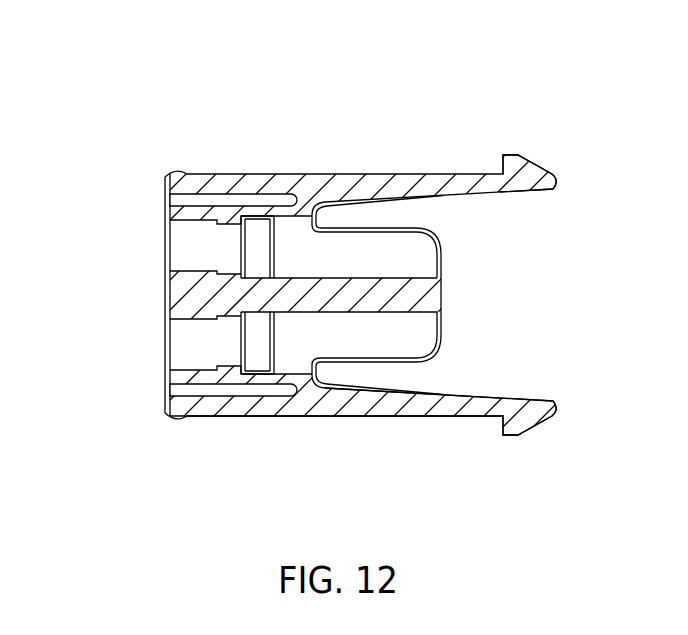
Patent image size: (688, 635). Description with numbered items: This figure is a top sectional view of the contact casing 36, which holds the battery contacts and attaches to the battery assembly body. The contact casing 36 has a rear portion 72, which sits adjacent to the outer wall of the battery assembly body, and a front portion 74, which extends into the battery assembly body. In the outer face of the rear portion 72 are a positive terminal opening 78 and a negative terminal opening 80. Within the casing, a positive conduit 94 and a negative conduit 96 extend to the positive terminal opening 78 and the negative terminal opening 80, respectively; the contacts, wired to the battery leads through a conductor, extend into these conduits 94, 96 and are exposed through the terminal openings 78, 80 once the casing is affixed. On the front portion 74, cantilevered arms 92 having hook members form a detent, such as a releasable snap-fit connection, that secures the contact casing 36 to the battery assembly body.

The contact casing 36 is at (412, 120).
The rear portion 72 is at (167, 165).
The front portion 74 is at (407, 422).
The positive terminal opening 78 is at (165, 352).
The negative terminal opening 80 is at (165, 248).
The cantilevered arm 92 is at (523, 160).
The positive conduit 94 is at (292, 353).
The negative conduit 96 is at (282, 228).